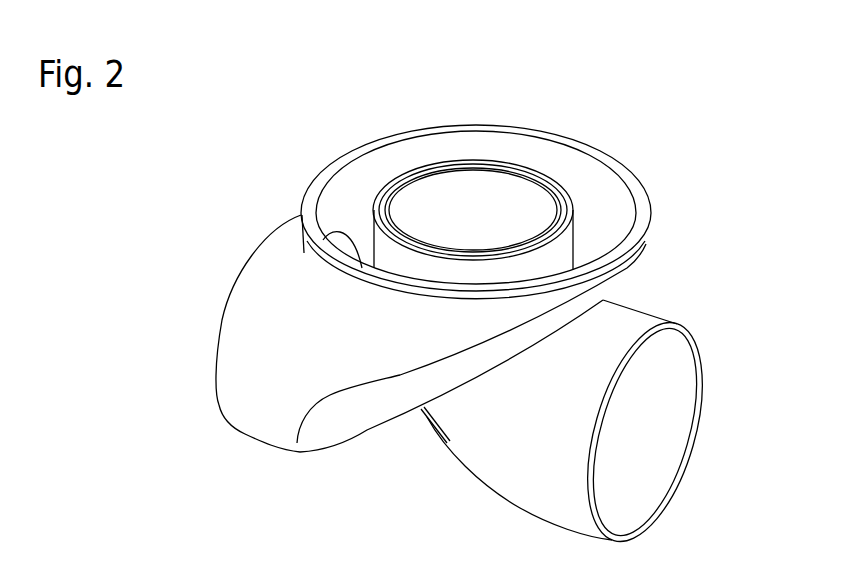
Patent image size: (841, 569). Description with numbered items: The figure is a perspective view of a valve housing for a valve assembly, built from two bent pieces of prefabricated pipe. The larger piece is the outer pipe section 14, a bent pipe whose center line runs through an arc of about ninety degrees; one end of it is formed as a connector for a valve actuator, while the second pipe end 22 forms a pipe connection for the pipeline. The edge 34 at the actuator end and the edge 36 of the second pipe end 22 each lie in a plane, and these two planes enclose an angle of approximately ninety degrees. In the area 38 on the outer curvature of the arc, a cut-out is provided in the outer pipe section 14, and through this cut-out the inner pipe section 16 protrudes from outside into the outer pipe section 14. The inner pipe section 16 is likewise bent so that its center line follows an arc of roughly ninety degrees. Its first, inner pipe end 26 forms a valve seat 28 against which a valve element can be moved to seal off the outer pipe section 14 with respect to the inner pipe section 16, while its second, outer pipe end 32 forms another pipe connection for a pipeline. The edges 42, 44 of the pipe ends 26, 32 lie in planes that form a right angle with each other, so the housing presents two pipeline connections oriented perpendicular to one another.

The outer pipe section 14 is at (347, 410).
The inner pipe section 16 is at (532, 470).
The second pipe end 22 is at (207, 361).
The first, inner pipe end 26 is at (520, 192).
The valve seat 28 is at (458, 202).
The second, outer pipe end 32 is at (634, 504).
The edge 34 is at (223, 407).
The edge 36 is at (623, 172).
The area of the outer curvature 38 is at (417, 412).
The edge 42 is at (678, 332).
The edge 44 is at (570, 210).